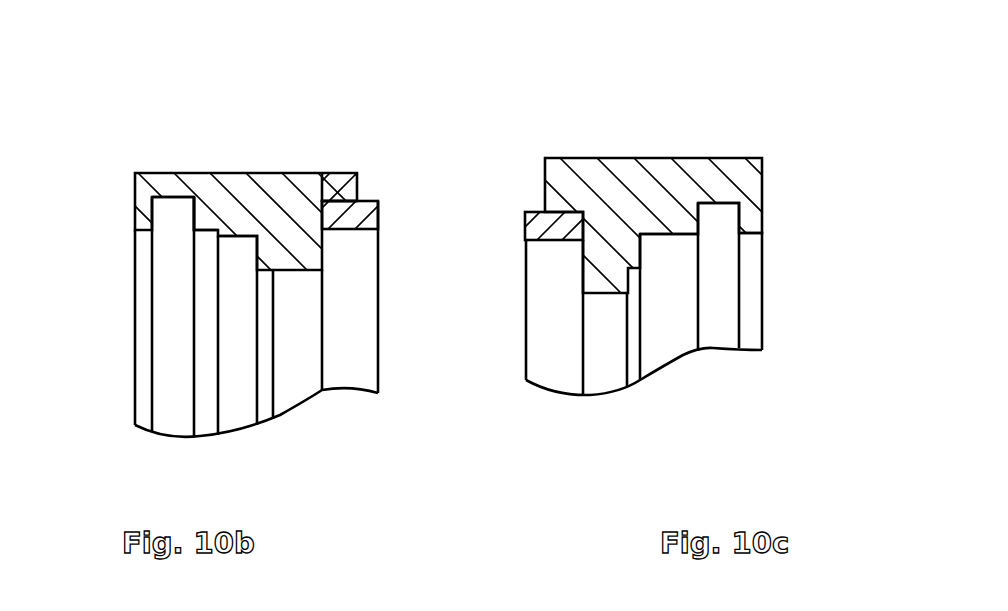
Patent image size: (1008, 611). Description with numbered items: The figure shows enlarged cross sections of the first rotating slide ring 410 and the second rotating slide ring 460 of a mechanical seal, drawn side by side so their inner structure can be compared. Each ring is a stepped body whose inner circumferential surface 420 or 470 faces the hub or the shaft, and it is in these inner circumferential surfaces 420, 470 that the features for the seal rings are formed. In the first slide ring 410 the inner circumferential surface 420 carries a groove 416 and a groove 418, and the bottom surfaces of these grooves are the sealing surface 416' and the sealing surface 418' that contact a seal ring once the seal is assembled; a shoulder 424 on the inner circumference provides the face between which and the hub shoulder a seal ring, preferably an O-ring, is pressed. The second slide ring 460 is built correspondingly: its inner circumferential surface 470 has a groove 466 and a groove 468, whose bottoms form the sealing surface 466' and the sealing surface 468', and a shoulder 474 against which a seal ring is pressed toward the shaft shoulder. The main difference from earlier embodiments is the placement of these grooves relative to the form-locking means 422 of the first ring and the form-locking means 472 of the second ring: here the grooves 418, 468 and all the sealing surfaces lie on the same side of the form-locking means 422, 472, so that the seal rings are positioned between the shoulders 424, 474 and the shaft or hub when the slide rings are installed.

In FIG. 10b, the first rotating slide ring 410 is at (292, 195).
In FIG. 10b, the groove 416 is at (122, 317).
In FIG. 10b, the sealing surface 416' is at (117, 223).
In FIG. 10b, the groove 418 is at (360, 146).
In FIG. 10b, the sealing surface 418' is at (153, 284).
In FIG. 10b, the inner circumferential surface 420 is at (208, 225).
In FIG. 10b, the form-locking means 422 is at (303, 305).
In FIG. 10b, the shoulder 424 is at (238, 250).
In FIG. 10c, the second rotating slide ring 460 is at (662, 208).
In FIG. 10c, the groove 466 is at (774, 277).
In FIG. 10c, the sealing surface 466' is at (773, 247).
In FIG. 10c, the groove 468 is at (605, 174).
In FIG. 10c, the sealing surface 468' is at (730, 324).
In FIG. 10c, the inner circumferential surface 470 is at (762, 245).
In FIG. 10c, the form-locking means 472 is at (605, 313).
In FIG. 10c, the shoulder 474 is at (625, 258).